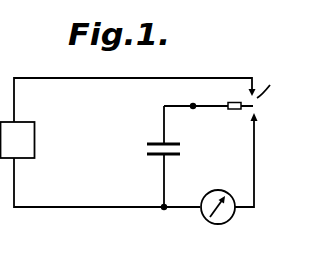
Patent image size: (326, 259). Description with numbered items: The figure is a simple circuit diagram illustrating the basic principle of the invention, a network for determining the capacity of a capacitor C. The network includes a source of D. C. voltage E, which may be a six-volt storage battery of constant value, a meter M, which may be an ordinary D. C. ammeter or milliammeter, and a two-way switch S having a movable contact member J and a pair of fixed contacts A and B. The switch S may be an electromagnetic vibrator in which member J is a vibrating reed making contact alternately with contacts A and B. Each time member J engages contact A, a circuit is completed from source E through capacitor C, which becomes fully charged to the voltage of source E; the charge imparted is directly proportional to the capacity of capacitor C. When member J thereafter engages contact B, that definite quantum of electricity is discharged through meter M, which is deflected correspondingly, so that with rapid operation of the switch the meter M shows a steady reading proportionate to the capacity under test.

The source of D. C. voltage E is at (35, 140).
The capacitor C is at (181, 150).
The movable contact member J is at (233, 102).
The two-way switch S is at (274, 92).
The fixed contact A is at (267, 78).
The fixed contact B is at (258, 117).
The meter M is at (214, 224).